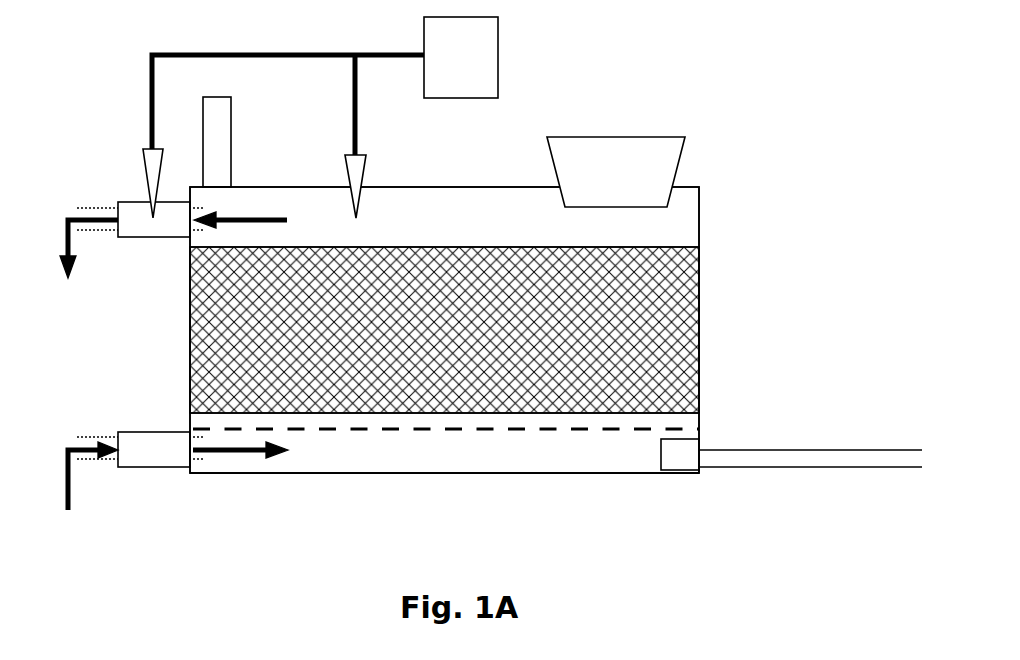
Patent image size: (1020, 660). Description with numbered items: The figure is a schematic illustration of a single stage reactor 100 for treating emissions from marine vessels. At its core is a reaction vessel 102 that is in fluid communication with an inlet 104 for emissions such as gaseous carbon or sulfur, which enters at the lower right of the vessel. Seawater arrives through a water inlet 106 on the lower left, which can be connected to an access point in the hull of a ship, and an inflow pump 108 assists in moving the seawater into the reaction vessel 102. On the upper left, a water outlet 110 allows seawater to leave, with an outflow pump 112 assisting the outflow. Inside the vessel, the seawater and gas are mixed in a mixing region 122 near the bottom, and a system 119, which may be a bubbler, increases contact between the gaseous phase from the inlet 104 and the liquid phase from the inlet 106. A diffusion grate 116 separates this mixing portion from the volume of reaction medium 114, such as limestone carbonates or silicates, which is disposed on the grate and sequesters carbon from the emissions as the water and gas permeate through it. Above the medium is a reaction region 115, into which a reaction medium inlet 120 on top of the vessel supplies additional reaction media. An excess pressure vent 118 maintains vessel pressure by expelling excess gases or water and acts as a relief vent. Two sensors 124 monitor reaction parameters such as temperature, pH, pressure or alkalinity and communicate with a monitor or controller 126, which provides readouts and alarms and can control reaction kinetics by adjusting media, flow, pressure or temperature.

The single stage reactor 100 is at (810, 221).
The reaction vessel 102 is at (700, 330).
The inlet 104 is at (777, 467).
The water inlet 106 is at (100, 437).
The inflow pump 108 is at (153, 468).
The water outlet 110 is at (97, 208).
The outflow pump 112 is at (155, 237).
The reaction medium 114 is at (653, 395).
The reaction region 115 is at (633, 222).
The diffusion grate 116 is at (473, 432).
The excess pressure vent 118 is at (230, 138).
The system to increase contact between a gaseous phase and a liquid phase 119 is at (680, 460).
The reaction medium inlet 120 is at (600, 152).
The mixing region 122 is at (397, 455).
The sensors 124 is at (143, 150).
The monitor or controller 126 is at (498, 55).